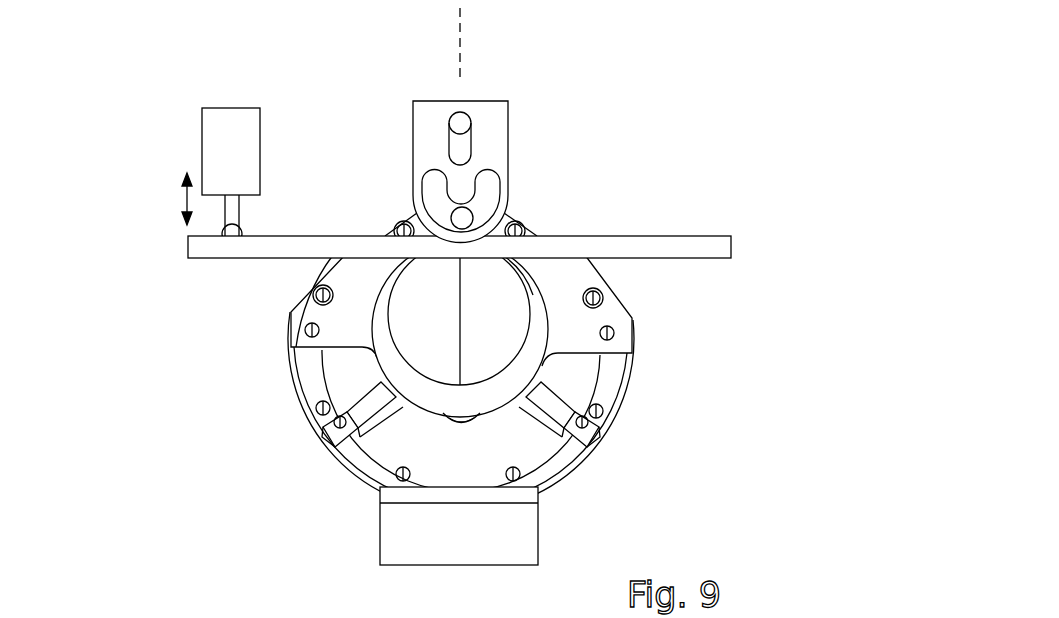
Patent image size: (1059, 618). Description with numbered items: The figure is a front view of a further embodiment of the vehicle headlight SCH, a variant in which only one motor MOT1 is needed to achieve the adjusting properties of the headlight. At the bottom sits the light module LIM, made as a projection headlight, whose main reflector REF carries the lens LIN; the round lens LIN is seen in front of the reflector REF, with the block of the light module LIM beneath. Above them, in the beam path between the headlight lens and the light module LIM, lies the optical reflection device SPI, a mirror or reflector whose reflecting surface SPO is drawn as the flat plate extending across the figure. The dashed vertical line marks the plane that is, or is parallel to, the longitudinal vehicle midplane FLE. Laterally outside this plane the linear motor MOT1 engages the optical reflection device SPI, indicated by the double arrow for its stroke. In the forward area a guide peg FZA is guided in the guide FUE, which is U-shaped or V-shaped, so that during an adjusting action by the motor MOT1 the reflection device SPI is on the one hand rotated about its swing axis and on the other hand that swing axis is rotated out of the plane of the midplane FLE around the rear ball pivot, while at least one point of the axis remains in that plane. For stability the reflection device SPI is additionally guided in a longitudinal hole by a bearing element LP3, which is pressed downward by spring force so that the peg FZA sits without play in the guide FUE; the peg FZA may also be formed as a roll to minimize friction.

The longitudinal vehicle midplane FLE is at (455, 47).
The bearing element LP3 is at (463, 123).
The vehicle headlight SCH is at (783, 80).
The linear motor MOT1 is at (208, 136).
The guide peg FZA is at (463, 220).
The guide FUE is at (463, 207).
The optical reflection device SPI is at (188, 234).
The reflecting surface SPO is at (228, 258).
The reflector REF is at (315, 391).
The light module LIM is at (335, 504).
The lens LIN is at (503, 327).